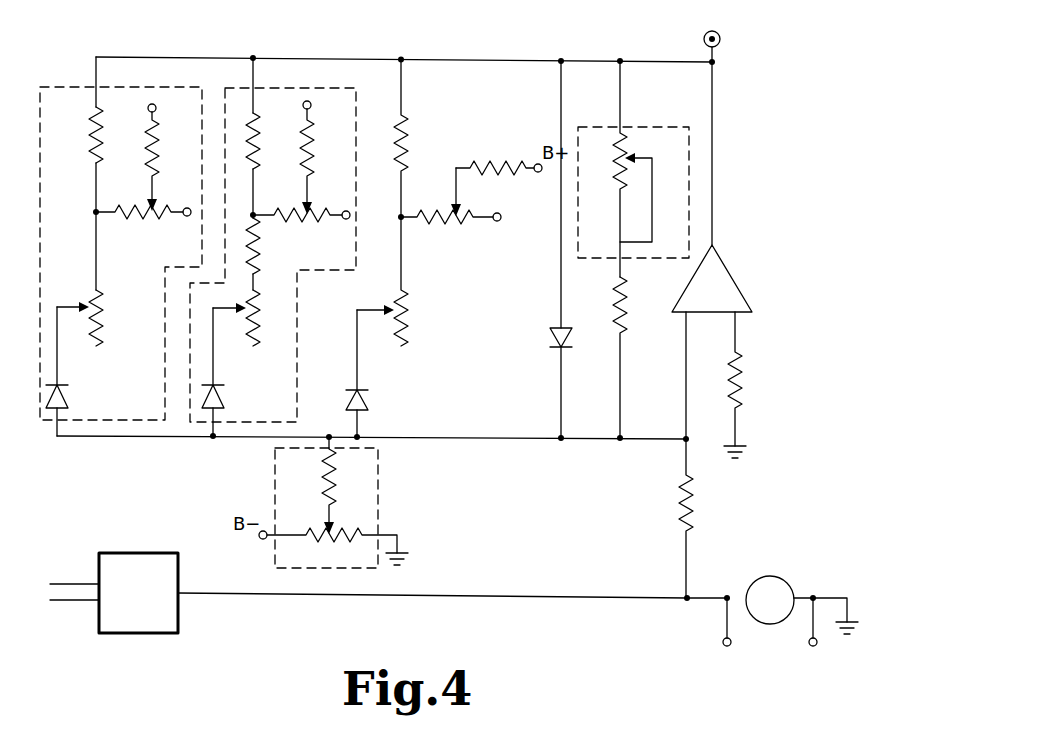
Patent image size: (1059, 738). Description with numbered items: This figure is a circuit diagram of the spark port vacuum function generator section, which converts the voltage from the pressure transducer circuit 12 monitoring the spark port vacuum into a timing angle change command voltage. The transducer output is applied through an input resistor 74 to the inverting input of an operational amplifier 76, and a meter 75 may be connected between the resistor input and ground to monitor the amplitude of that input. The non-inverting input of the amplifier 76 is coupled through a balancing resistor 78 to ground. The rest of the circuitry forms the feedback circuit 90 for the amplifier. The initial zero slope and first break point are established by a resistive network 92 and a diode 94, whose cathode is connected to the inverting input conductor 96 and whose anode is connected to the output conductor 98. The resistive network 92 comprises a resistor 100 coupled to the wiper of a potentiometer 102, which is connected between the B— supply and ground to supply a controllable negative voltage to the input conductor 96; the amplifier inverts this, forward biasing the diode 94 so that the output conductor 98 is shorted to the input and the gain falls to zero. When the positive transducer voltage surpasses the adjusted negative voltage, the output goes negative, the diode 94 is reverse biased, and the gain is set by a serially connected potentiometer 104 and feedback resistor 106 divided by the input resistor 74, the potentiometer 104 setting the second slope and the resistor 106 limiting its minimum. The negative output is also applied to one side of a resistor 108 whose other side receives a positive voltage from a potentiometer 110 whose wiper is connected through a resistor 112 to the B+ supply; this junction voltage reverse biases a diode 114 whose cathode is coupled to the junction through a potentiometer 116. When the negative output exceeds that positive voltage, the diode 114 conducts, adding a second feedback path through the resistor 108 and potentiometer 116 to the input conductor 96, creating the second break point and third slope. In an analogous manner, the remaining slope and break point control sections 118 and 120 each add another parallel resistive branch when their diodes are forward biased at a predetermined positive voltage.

The pressure transducer circuit 12 is at (164, 553).
The input resistor 74 is at (695, 512).
The meter 75 is at (788, 580).
The operational amplifier 76 is at (740, 285).
The balancing resistor 78 is at (740, 392).
The feedback circuit 90 is at (113, 44).
The resistive network 92 is at (380, 508).
The diode 94 is at (548, 336).
The inverting input conductor 96 is at (652, 442).
The output conductor 98 is at (714, 140).
The resistor 100 is at (325, 480).
The potentiometer 102 is at (318, 540).
The potentiometer 104 is at (617, 166).
The feedback resistor 106 is at (624, 305).
The resistor 108 is at (407, 140).
The potentiometer 110 is at (443, 226).
The resistor 112 is at (481, 163).
The diode 114 is at (368, 407).
The potentiometer 116 is at (401, 340).
The slope and break point control section 118 is at (371, 97).
The slope and break point control section 120 is at (64, 84).